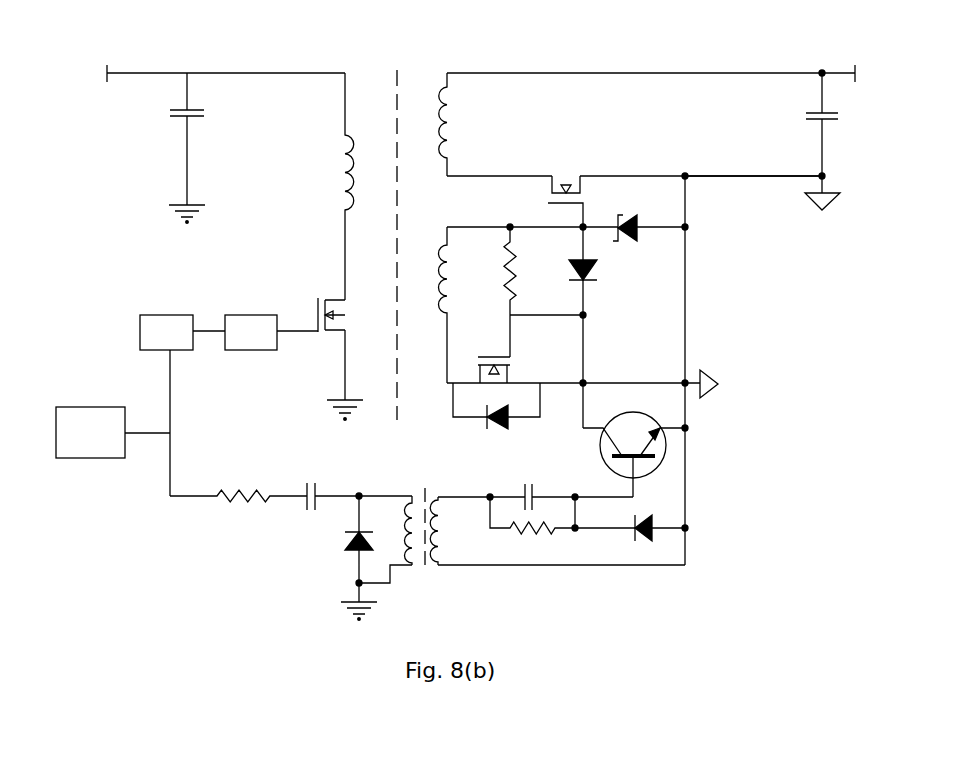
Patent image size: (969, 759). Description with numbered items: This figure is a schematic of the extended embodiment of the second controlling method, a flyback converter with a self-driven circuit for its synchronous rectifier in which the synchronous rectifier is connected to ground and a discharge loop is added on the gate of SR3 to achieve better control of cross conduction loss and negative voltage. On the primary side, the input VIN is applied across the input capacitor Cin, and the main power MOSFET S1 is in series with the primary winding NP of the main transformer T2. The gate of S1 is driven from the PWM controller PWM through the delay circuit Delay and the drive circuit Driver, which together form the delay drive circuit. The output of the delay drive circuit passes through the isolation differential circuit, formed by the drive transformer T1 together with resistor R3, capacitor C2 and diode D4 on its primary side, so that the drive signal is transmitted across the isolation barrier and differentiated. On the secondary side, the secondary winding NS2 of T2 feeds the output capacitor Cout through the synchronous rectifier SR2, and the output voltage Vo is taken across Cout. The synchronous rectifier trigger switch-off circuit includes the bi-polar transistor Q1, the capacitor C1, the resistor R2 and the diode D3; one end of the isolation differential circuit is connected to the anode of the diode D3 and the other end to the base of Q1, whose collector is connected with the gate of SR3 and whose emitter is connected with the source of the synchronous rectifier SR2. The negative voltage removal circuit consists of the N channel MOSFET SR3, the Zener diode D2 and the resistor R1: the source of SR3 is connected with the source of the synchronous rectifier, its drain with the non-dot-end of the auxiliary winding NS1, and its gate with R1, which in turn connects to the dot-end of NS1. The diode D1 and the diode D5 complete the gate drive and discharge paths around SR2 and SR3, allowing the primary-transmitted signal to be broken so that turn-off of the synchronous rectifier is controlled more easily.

The input voltage terminal VIN is at (203, 73).
The input capacitor Cin is at (205, 148).
The primary winding NP is at (319, 186).
The main power MOSFET S1 is at (321, 357).
The delay circuit Delay is at (182, 405).
The drive circuit Driver is at (251, 332).
The PWM controller PWM is at (113, 432).
The resistor R3 is at (238, 484).
The capacitor C2 is at (355, 488).
The diode D4 is at (361, 556).
The gate drive transformer T1 is at (539, 519).
The capacitor C1 is at (560, 492).
The resistor R2 is at (562, 527).
The diode D3 is at (657, 540).
The bi-polar transistor Q1 is at (635, 447).
The main transformer T2 is at (413, 235).
The secondary winding NS2 is at (630, 124).
The synchronous rectifier SR2 is at (684, 182).
The output capacitor Cout is at (761, 140).
The output voltage terminal Vo is at (847, 73).
The Zener diode D2 is at (567, 217).
The winding NS1 is at (463, 305).
The resistor R1 is at (545, 292).
The diode D1 is at (627, 370).
The N channel MOSFET SR3 is at (582, 377).
The diode D5 is at (496, 416).